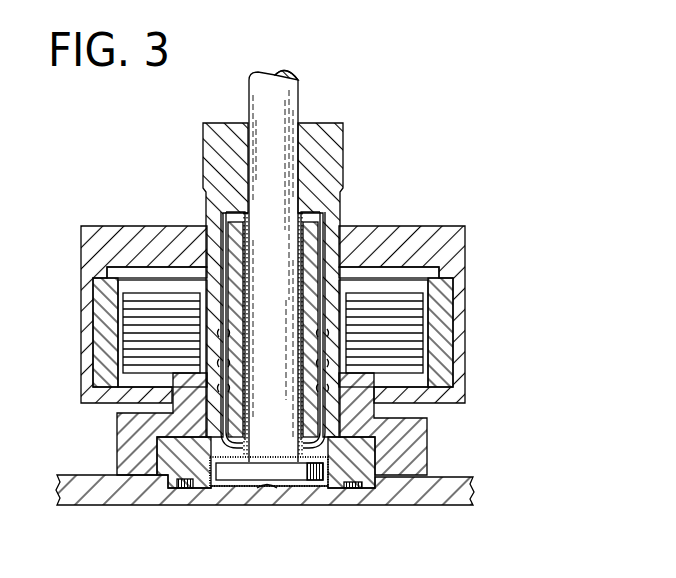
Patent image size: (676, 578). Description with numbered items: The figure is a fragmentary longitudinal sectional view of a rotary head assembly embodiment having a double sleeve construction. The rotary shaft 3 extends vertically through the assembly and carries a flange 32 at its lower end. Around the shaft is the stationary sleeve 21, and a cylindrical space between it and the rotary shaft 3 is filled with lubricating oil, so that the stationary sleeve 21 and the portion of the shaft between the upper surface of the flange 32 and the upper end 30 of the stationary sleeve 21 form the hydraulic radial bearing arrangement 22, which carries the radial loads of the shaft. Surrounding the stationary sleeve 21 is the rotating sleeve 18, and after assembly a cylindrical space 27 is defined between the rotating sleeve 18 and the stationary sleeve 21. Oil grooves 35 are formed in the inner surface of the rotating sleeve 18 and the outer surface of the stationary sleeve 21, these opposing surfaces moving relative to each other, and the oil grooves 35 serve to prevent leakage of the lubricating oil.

The rotary shaft 3 is at (296, 97).
The rotating sleeve 18 is at (216, 428).
The stationary sleeve 21 is at (307, 438).
The hydraulic radial bearing arrangement 22 is at (242, 417).
The cylindrical space 27 is at (226, 298).
The upper end of the stationary sleeve 30 is at (318, 222).
The flange 32 is at (236, 467).
The oil grooves 35 is at (226, 390).